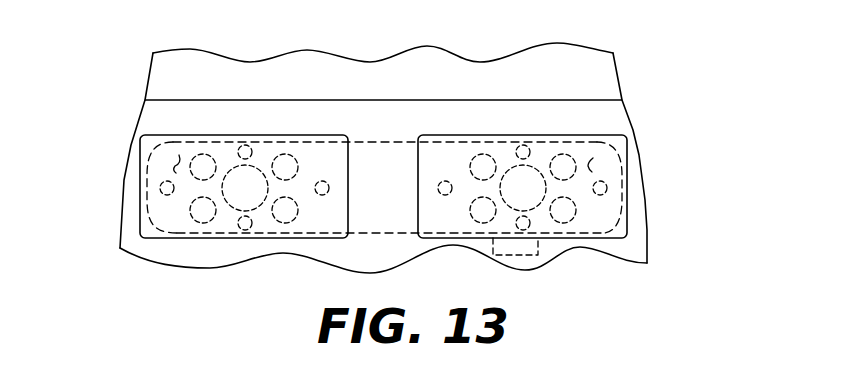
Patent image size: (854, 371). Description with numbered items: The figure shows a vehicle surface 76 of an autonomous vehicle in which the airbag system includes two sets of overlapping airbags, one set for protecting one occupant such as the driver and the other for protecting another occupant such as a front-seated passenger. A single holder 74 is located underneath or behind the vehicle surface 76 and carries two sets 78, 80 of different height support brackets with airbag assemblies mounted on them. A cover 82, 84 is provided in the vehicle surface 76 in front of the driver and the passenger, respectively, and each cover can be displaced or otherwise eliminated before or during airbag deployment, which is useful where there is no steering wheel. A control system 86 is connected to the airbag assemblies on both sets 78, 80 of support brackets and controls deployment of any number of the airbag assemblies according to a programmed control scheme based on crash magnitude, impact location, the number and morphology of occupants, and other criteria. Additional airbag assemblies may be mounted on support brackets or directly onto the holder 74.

The holder 74 is at (158, 225).
The vehicle surface 76 is at (162, 128).
The first set of support brackets 78 is at (173, 165).
The second set of support brackets 80 is at (590, 166).
The cover 82 is at (140, 222).
The cover 84 is at (628, 217).
The control system 86 is at (538, 255).